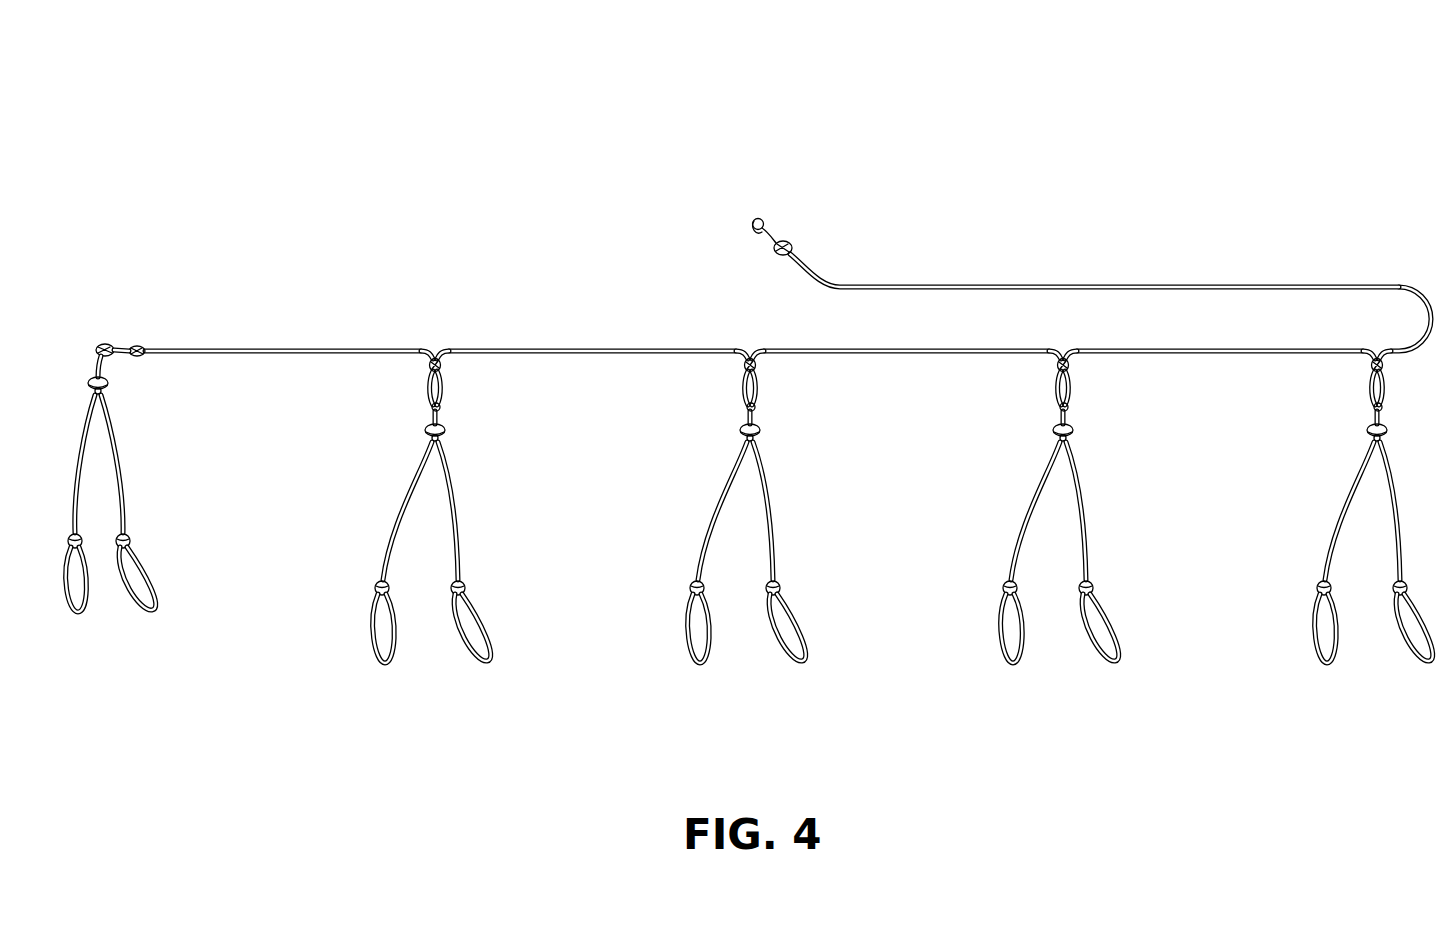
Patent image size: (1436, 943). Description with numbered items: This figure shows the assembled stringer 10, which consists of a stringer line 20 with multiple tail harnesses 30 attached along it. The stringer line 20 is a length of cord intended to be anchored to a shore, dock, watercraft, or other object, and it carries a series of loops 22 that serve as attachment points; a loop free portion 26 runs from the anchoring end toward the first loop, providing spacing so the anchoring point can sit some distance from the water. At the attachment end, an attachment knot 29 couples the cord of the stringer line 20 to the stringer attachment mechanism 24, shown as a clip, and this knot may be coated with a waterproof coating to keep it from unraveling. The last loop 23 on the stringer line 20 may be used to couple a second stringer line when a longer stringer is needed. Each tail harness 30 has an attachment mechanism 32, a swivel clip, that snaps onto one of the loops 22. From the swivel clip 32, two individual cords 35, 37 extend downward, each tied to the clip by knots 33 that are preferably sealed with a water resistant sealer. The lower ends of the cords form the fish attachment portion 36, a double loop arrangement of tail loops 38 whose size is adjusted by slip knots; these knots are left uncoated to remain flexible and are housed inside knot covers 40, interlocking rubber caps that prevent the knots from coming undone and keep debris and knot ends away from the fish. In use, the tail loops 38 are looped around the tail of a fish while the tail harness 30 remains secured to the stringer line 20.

The stringer 10 is at (1088, 88).
The stringer line 20 is at (1080, 285).
The loops 22 is at (761, 383).
The last loop 23 is at (117, 343).
The stringer attachment mechanism 24 is at (777, 236).
The main line return portion 26 is at (1248, 286).
The attachment knot 29 is at (800, 255).
The tail harness 30 is at (145, 517).
The attachment mechanism 32 is at (432, 418).
The knots 33 is at (1073, 443).
The cord 35 is at (456, 505).
The fish attachment portion 36 is at (683, 567).
The cord 37 is at (402, 500).
The tail loops 38 is at (491, 640).
The knot covers 40 is at (464, 586).